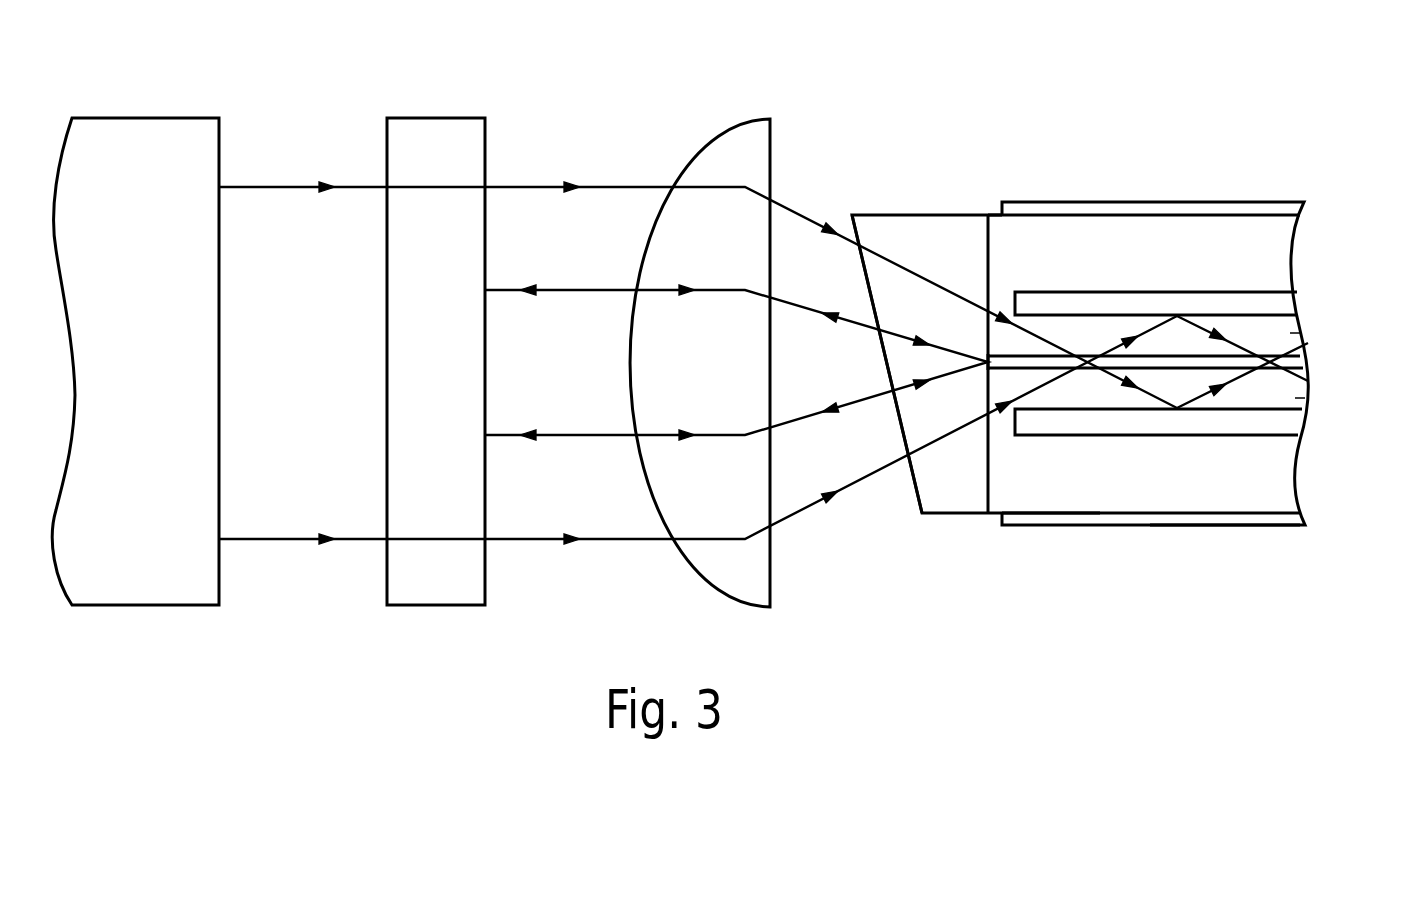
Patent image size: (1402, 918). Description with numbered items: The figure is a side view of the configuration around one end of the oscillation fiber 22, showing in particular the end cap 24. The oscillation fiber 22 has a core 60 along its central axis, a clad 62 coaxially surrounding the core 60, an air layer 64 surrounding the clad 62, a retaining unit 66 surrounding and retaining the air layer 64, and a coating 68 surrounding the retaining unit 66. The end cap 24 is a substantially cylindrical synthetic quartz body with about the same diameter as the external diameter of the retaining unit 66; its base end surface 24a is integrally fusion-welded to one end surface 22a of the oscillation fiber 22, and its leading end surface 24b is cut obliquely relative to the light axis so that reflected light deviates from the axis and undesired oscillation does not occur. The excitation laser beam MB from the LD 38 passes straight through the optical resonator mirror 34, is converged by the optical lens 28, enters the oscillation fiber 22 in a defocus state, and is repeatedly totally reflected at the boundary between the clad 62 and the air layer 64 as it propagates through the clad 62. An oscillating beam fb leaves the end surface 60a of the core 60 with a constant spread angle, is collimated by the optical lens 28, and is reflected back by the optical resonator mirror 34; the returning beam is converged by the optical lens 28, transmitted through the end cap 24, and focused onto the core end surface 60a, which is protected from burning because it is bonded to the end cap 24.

The oscillation fiber 22 is at (1182, 165).
The end surface of the oscillation fiber 22a is at (986, 250).
The end cap 24 is at (897, 215).
The base end surface 24a is at (990, 240).
The leading end surface 24b is at (908, 483).
The optical lens 28 is at (752, 119).
The optical resonator mirror 34 is at (432, 118).
The LD 38 is at (145, 118).
The core 60 is at (1167, 366).
The end surface of the core 60a is at (987, 370).
The clad 62 is at (1290, 333).
The air layer 64 is at (1267, 300).
The retaining unit 66 is at (1038, 499).
The coating 68 is at (1243, 520).
The excitation laser beam MB is at (271, 187).
The oscillating beam fb is at (566, 292).